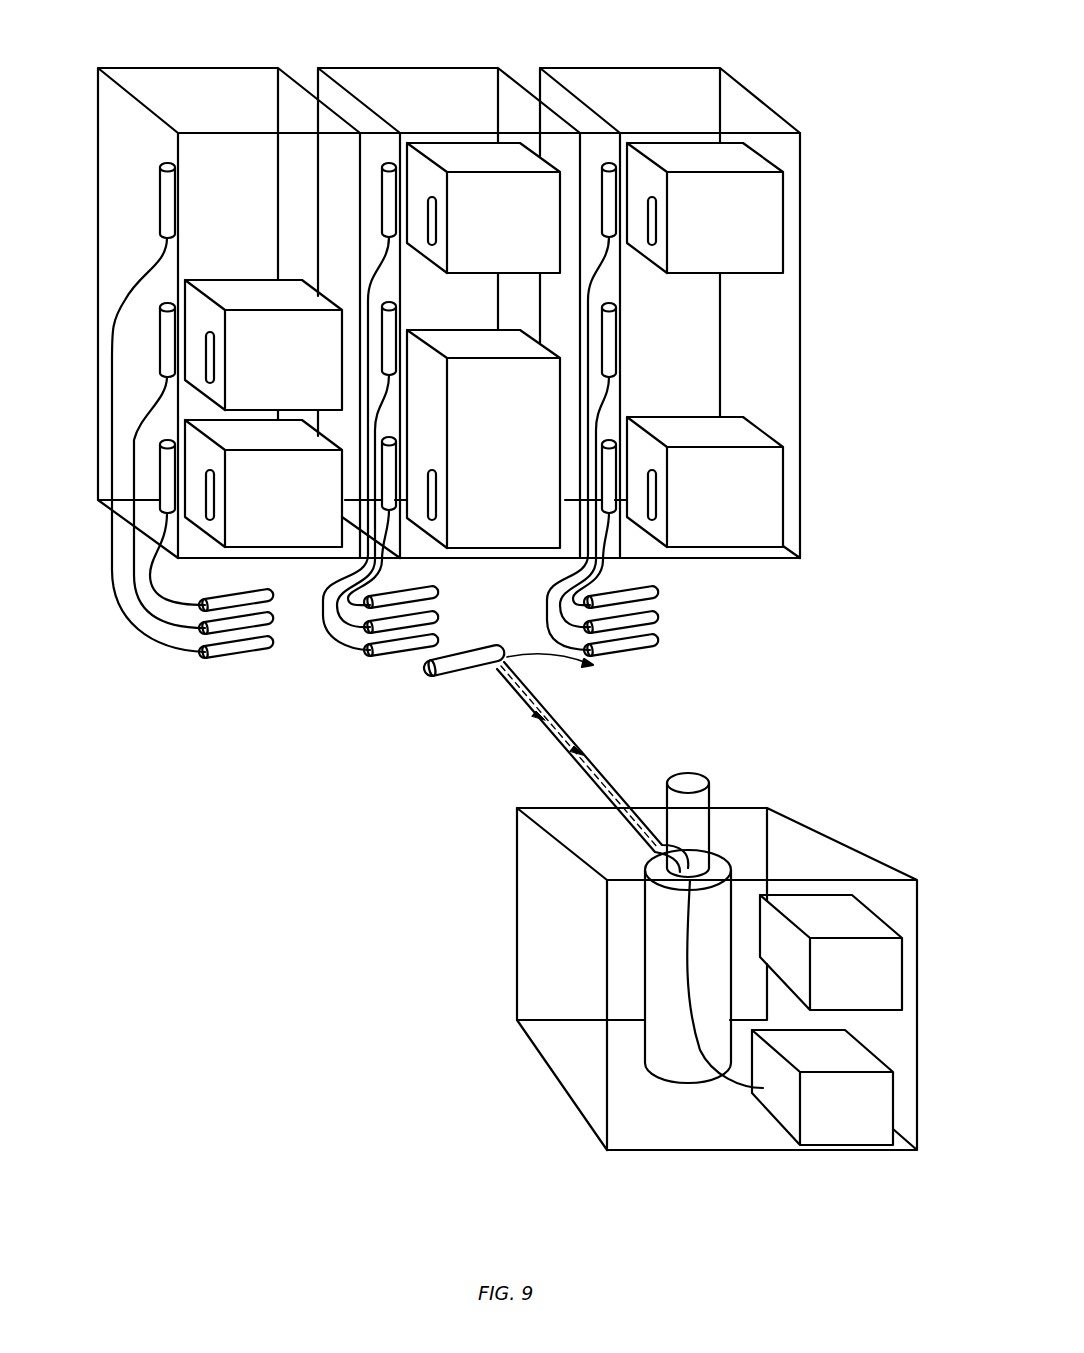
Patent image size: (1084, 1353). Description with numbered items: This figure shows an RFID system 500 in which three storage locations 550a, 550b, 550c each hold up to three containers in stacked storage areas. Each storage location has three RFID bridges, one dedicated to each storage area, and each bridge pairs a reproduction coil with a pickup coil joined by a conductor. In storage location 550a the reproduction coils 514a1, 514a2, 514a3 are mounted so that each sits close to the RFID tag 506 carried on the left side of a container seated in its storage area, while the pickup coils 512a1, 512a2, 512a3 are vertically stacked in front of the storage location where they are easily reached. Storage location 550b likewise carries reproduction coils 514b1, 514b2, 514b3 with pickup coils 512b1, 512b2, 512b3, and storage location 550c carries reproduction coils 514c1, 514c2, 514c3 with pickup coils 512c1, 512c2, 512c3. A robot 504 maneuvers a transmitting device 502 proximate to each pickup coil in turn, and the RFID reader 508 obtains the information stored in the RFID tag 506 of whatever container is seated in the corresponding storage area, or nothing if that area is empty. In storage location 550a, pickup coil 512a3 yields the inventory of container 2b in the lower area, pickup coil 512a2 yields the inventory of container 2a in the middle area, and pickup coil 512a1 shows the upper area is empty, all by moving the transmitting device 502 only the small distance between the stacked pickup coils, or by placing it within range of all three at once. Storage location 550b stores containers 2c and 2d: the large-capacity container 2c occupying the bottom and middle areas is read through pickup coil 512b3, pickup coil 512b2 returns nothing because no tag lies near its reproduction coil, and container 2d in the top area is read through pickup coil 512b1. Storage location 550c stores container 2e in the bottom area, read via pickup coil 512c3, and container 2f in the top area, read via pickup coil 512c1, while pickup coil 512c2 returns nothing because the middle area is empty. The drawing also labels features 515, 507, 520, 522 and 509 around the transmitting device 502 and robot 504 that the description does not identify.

The RFID system 500 is at (147, 660).
The storage location 550a is at (240, 48).
The storage location 550b is at (507, 48).
The storage location 550c is at (787, 68).
The container 2a is at (263, 345).
The container 2b is at (263, 483).
The container 2c is at (483, 439).
The container 2d is at (483, 208).
The container 2e is at (705, 482).
The container 2f is at (705, 208).
The RFID tag 506 is at (213, 350).
The reproduction coil 514a1 is at (171, 450).
The reproduction coil 514a2 is at (168, 300).
The reproduction coil 514a3 is at (168, 180).
The reproduction coil 514b1 is at (393, 452).
The reproduction coil 514b2 is at (395, 314).
The reproduction coil 514b3 is at (389, 160).
The reproduction coil 514c1 is at (609, 440).
The reproduction coil 514c2 is at (611, 323).
The reproduction coil 514c3 is at (609, 160).
The pickup coil 512a1 is at (258, 597).
The pickup coil 512a2 is at (253, 630).
The pickup coil 512a3 is at (229, 657).
The pickup coil 512b1 is at (434, 594).
The pickup coil 512b2 is at (435, 617).
The pickup coil 512b3 is at (402, 661).
The pickup coil 512c1 is at (657, 594).
The pickup coil 512c2 is at (657, 617).
The pickup coil 512c3 is at (657, 642).
The transmitting device 502 is at (444, 675).
The conduit 515 is at (493, 701).
The line 507 is at (530, 738).
The flow direction 520 is at (563, 732).
The flow direction 522 is at (530, 660).
The robot 504 is at (508, 1088).
The pump 509 is at (660, 962).
The RFID reader 508 is at (840, 1133).